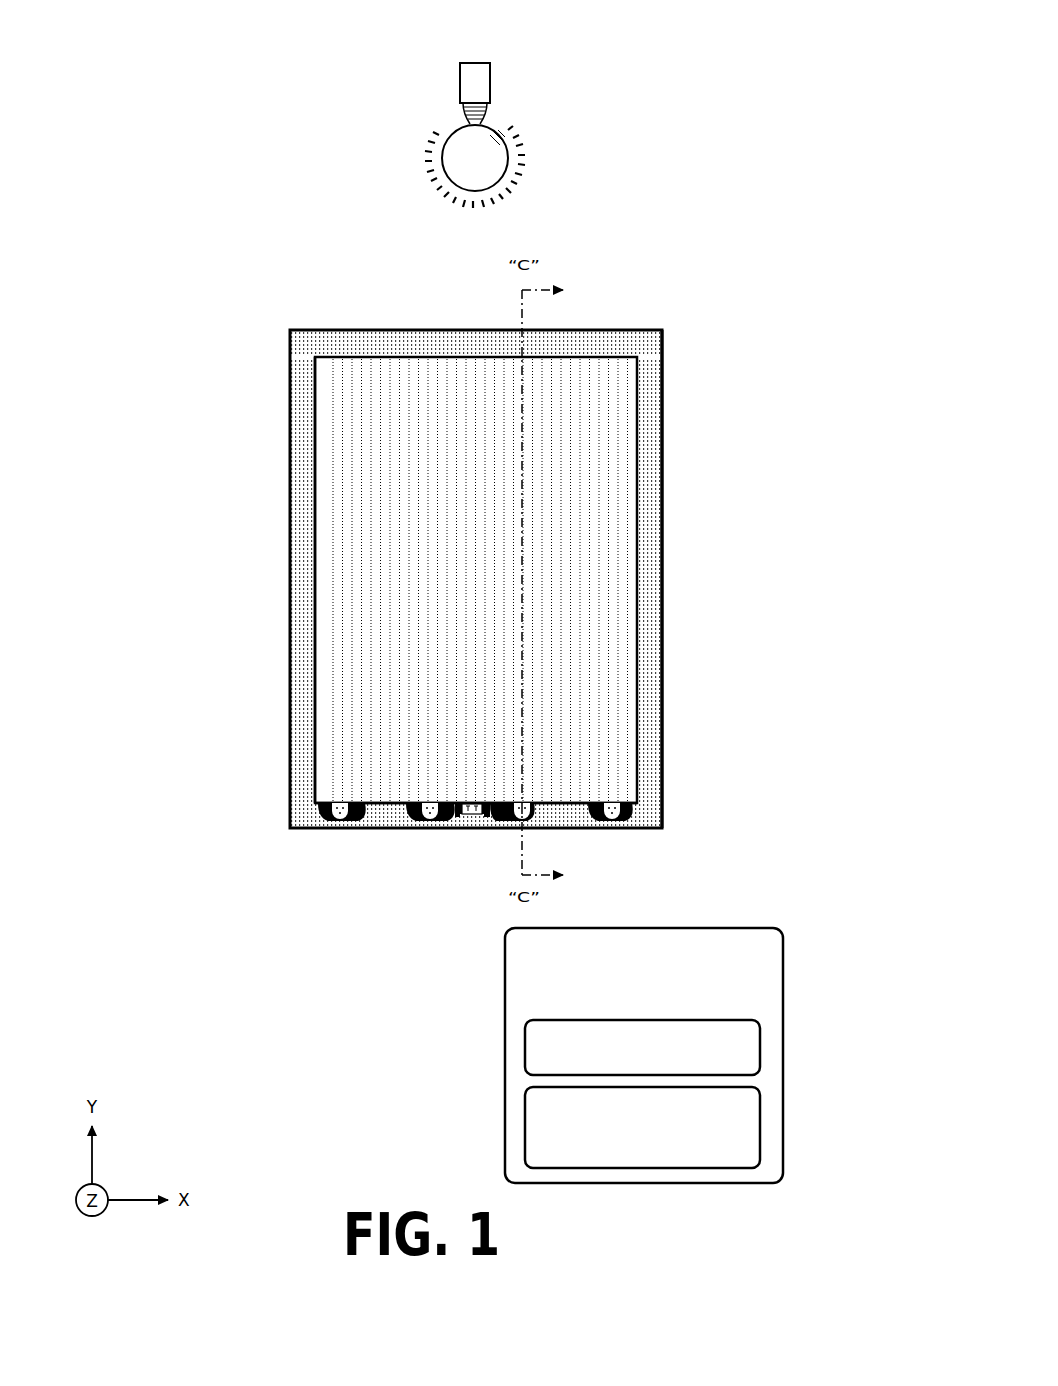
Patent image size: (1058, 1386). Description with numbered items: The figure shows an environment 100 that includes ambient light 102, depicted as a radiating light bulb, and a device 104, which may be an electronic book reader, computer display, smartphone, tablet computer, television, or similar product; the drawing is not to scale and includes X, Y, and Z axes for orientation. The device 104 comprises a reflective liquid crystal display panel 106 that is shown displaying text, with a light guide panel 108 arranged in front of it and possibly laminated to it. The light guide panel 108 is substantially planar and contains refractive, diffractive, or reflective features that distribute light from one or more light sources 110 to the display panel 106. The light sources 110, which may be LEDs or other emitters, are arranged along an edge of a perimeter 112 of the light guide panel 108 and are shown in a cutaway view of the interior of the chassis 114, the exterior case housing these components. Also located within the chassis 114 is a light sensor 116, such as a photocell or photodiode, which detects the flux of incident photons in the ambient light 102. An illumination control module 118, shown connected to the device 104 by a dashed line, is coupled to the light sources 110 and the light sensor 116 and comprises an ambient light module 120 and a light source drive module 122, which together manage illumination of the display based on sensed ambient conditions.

The environment 100 is at (709, 75).
The ambient light 102 is at (418, 189).
The device 104 is at (558, 330).
The liquid crystal display panel 106 is at (408, 363).
The light guide panel 108 is at (342, 692).
The light source 110 is at (332, 820).
The perimeter 112 is at (637, 423).
The chassis 114 is at (648, 620).
The light sensor 116 is at (466, 828).
The illumination control module 118 is at (560, 818).
The ambient light module 120 is at (660, 1068).
The light source drive module 122 is at (660, 1160).